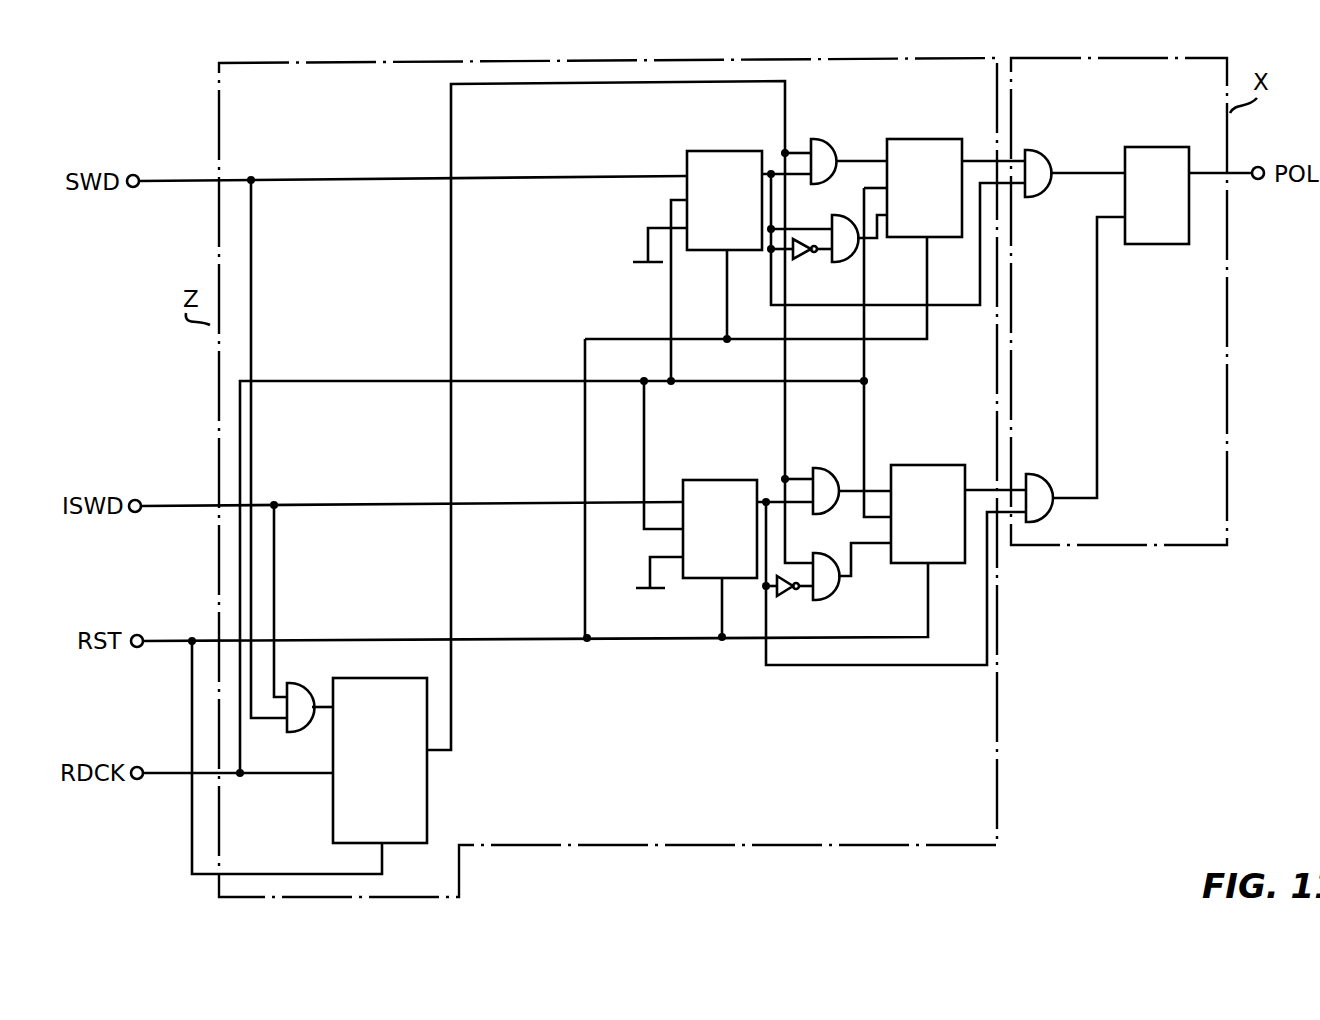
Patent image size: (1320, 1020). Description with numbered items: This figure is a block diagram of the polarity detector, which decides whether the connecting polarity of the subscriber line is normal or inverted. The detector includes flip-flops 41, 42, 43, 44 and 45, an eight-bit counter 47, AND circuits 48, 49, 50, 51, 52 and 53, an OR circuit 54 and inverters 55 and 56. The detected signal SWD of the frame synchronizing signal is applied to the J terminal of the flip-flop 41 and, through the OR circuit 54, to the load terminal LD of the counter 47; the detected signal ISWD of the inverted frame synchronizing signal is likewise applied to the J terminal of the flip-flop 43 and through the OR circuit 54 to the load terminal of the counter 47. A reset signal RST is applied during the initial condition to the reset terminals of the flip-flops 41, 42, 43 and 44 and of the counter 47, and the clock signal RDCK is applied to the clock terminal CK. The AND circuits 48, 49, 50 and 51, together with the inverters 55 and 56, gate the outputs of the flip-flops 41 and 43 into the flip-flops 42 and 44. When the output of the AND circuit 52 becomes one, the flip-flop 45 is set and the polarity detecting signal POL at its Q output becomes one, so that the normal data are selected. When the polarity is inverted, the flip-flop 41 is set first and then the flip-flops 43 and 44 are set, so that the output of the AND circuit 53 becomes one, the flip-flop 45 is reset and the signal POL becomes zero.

The flip-flop 41 is at (710, 151).
The flip-flop 42 is at (920, 139).
The flip-flop 43 is at (715, 480).
The flip-flop 44 is at (922, 465).
The flip-flop 45 is at (1150, 147).
The 8 bits counter 47 is at (428, 805).
The AND circuit 48 is at (820, 139).
The AND circuit 49 is at (835, 218).
The AND circuit 50 is at (822, 468).
The AND circuit 51 is at (834, 598).
The AND circuit 52 is at (1031, 150).
The AND circuit 53 is at (1033, 474).
The OR circuit 54 is at (303, 732).
The inverter 55 is at (802, 261).
The inverter 56 is at (779, 597).